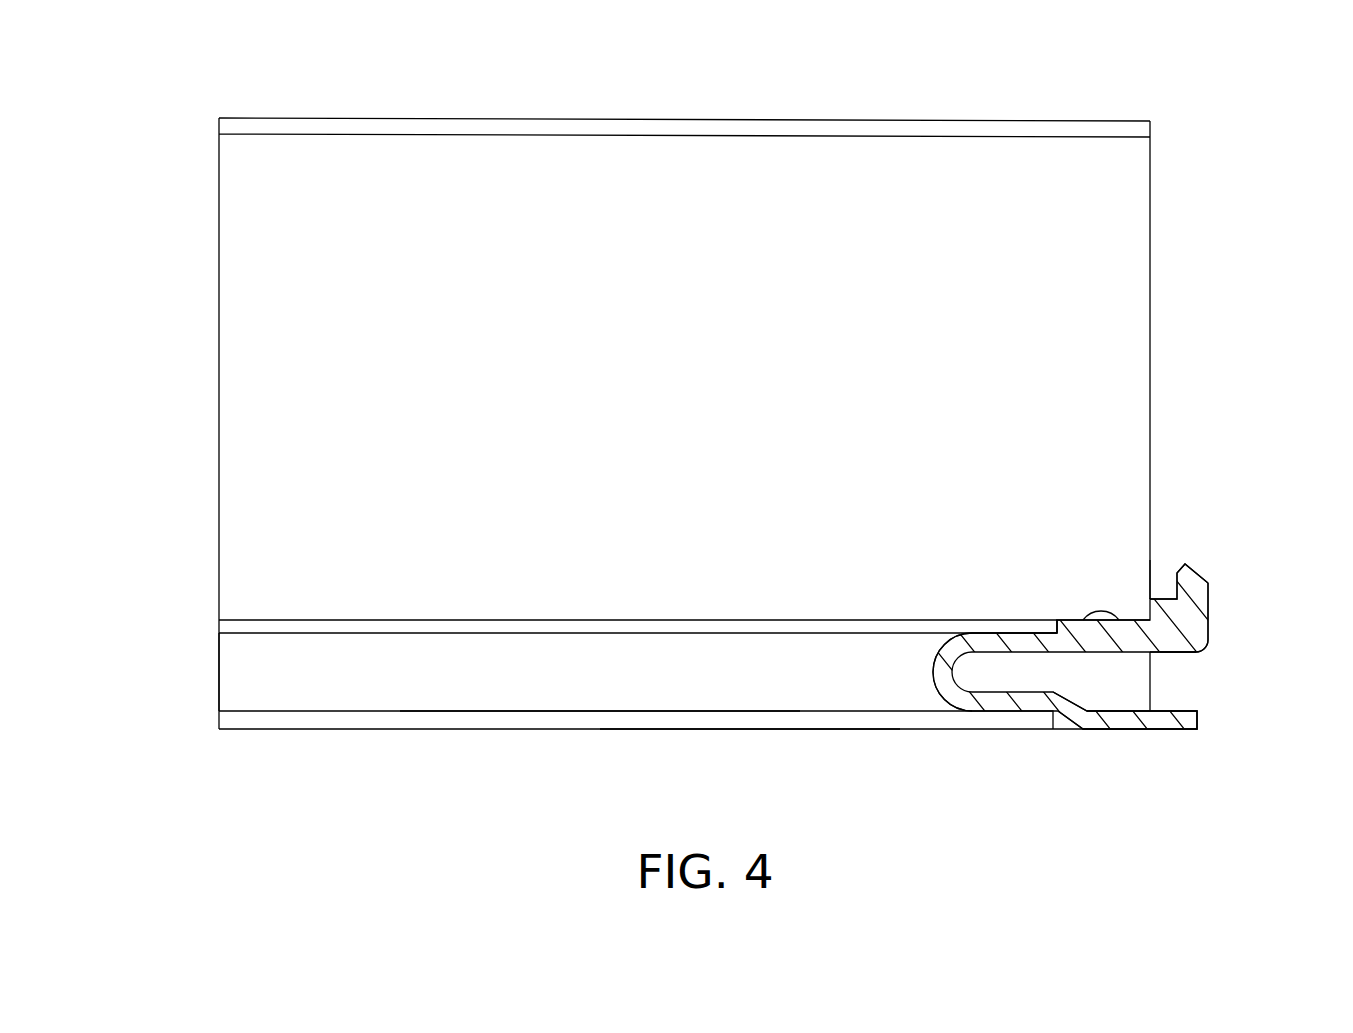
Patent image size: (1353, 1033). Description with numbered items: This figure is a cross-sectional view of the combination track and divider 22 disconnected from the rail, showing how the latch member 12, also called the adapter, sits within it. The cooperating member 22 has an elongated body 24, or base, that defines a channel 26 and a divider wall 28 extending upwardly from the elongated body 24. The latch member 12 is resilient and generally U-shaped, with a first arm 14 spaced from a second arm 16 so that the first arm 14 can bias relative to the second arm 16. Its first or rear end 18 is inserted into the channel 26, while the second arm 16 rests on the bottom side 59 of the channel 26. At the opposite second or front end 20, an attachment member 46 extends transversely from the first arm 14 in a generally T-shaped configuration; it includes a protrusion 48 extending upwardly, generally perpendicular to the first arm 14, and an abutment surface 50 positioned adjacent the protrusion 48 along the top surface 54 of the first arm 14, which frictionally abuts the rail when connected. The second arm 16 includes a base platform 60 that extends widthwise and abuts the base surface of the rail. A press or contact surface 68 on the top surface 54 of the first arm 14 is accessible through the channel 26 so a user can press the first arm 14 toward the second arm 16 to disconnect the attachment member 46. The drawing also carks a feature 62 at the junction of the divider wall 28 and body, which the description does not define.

The latch member 12 is at (952, 703).
The first arm 14 is at (987, 632).
The second arm 16 is at (1015, 705).
The first end 18 is at (910, 680).
The second end 20 is at (1212, 661).
The combination track and divider 22 is at (503, 712).
The elongated body 24 is at (377, 717).
The channel 26 is at (634, 692).
The divider wall 28 is at (683, 195).
The attachment member 46 is at (1195, 634).
The protrusion 48 is at (1196, 601).
The abutment surface 50 is at (1163, 594).
The top surface 54 is at (1043, 627).
The bottom side 59 is at (738, 730).
The base platform 60 is at (1142, 718).
The panel lower surface 62 is at (270, 633).
The press surface 68 is at (1100, 612).